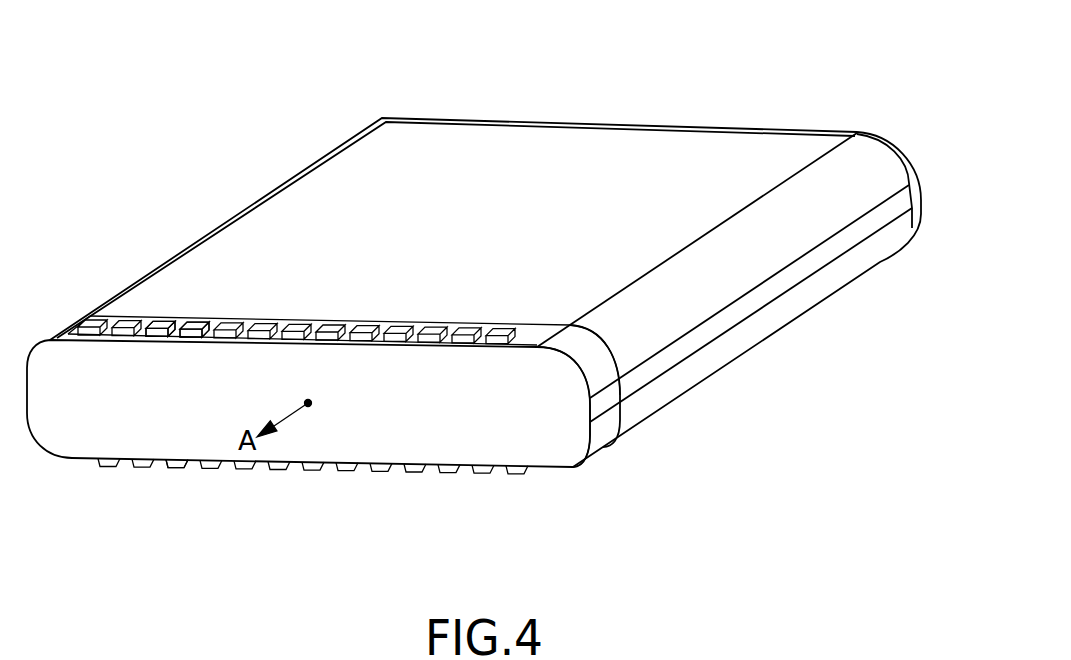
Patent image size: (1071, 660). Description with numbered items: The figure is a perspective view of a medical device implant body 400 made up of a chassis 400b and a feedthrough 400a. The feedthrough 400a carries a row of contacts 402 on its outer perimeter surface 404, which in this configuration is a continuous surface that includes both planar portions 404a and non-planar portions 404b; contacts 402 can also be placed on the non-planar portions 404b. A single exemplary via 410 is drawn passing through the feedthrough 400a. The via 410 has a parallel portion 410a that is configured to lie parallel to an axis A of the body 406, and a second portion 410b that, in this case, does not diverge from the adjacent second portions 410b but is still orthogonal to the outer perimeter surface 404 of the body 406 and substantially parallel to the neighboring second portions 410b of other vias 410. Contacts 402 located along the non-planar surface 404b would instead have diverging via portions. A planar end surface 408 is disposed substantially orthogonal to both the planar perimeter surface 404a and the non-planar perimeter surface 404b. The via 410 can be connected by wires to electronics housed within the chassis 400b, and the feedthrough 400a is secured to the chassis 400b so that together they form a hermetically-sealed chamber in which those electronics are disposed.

The medical device implant body 400 is at (816, 69).
The feedthrough 400a is at (70, 433).
The chassis 400b is at (280, 207).
The contacts 402 is at (178, 470).
The outer perimeter surface 404 is at (623, 447).
The planar portion 404a is at (536, 314).
The non-planar portion 404b is at (609, 333).
The body 406 is at (572, 442).
The planar end surface 408 is at (402, 443).
The via 410 is at (161, 341).
The parallel portion 410a is at (202, 354).
The second portion 410b is at (160, 343).